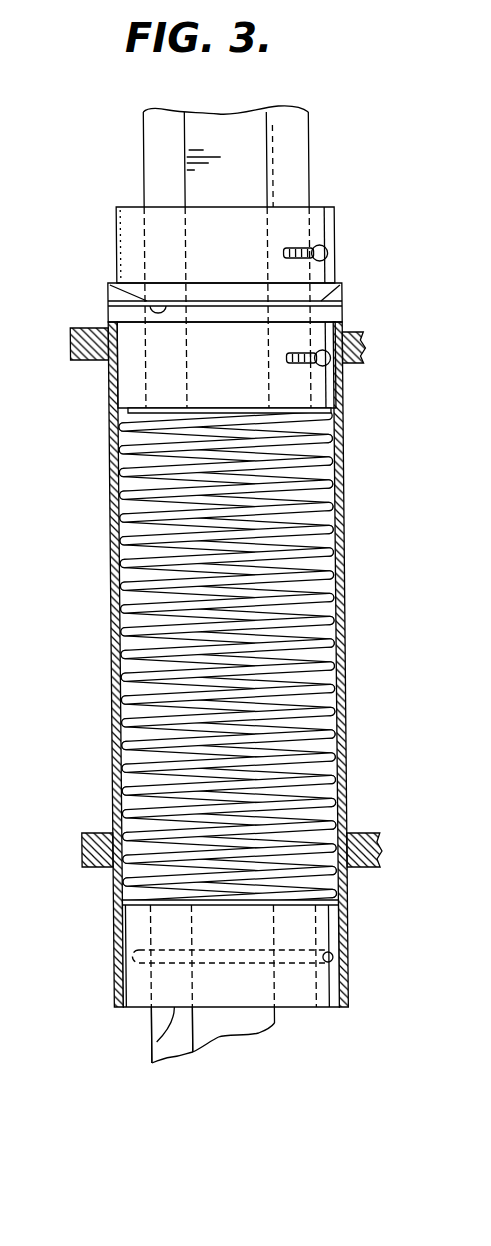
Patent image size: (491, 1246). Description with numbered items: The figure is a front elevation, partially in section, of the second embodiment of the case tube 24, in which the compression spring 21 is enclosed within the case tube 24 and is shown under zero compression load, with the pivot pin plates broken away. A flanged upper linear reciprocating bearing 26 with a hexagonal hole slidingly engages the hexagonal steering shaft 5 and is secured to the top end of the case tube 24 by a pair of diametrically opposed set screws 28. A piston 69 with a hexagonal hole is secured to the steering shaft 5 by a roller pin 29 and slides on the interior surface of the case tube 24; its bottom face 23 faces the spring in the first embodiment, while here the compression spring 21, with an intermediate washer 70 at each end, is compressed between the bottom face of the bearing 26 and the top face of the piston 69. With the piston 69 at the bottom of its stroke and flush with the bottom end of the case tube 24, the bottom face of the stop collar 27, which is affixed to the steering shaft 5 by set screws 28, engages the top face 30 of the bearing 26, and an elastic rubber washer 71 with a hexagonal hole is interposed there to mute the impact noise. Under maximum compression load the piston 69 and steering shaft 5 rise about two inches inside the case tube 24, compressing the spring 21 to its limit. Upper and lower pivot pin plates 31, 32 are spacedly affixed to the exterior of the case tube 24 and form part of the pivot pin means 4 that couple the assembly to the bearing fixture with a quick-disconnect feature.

The pivot pin means 4 is at (420, 169).
The steering shaft 5 is at (152, 150).
The compression spring 21 is at (323, 778).
The bottom face 23 is at (145, 1040).
The case tube 24 is at (343, 698).
The flanged upper linear reciprocating bearing 26 is at (344, 318).
The stop collar 27 is at (333, 217).
The set screws 28 is at (328, 253).
The roller pin 29 is at (242, 963).
The top face 30 is at (110, 285).
The upper pivot pin plate 31 is at (72, 341).
The lower pivot pin plate 32 is at (77, 842).
The piston 69 is at (319, 937).
The intermediate washer 70 is at (335, 407).
The rubber washer 71 is at (342, 290).